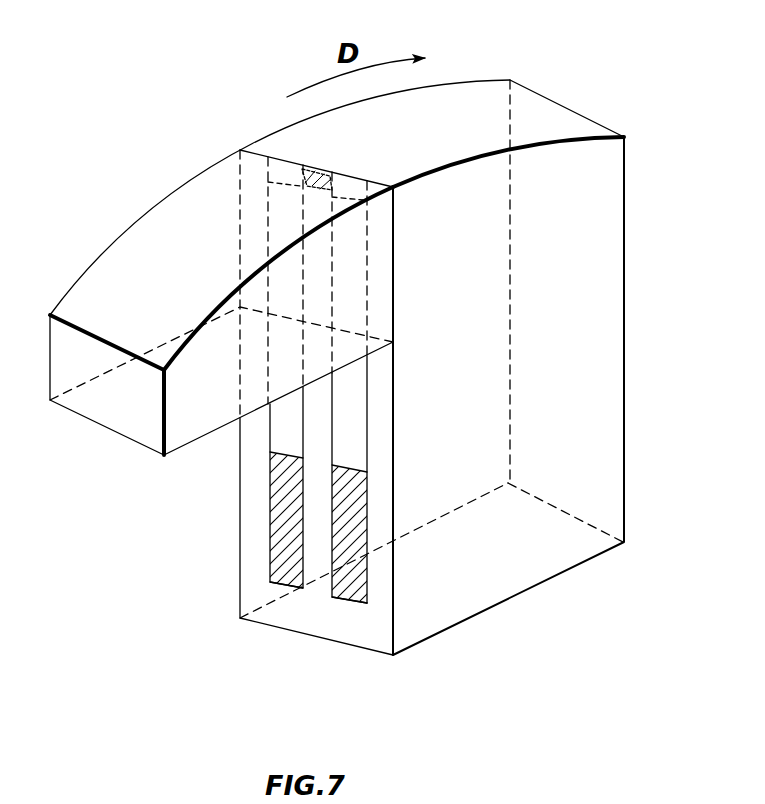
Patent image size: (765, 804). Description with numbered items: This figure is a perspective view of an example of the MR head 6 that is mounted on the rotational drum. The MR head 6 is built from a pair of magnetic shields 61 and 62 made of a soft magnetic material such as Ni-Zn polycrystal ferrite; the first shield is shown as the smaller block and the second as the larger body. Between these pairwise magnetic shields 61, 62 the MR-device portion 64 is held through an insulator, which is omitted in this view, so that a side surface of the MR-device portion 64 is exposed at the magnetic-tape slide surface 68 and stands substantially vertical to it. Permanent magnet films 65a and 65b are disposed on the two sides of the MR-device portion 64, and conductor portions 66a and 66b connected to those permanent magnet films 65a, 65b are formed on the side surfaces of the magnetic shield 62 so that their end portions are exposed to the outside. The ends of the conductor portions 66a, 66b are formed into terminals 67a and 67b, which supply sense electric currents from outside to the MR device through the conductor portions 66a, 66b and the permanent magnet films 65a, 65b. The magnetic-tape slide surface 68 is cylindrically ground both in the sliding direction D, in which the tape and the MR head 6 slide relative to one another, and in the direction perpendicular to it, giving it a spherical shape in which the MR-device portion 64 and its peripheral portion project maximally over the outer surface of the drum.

The MR head 6 is at (168, 183).
The magnetic shield 61 is at (95, 403).
The magnetic shield 62 is at (508, 580).
The MR-device portion 64 is at (317, 173).
The permanent magnet film 65a is at (282, 170).
The permanent magnet film 65b is at (352, 190).
The conductor portion 66a is at (278, 432).
The conductor portion 66b is at (345, 447).
The terminal 67a is at (285, 577).
The terminal 67b is at (348, 588).
The magnetic-tape slide surface 68 is at (110, 272).